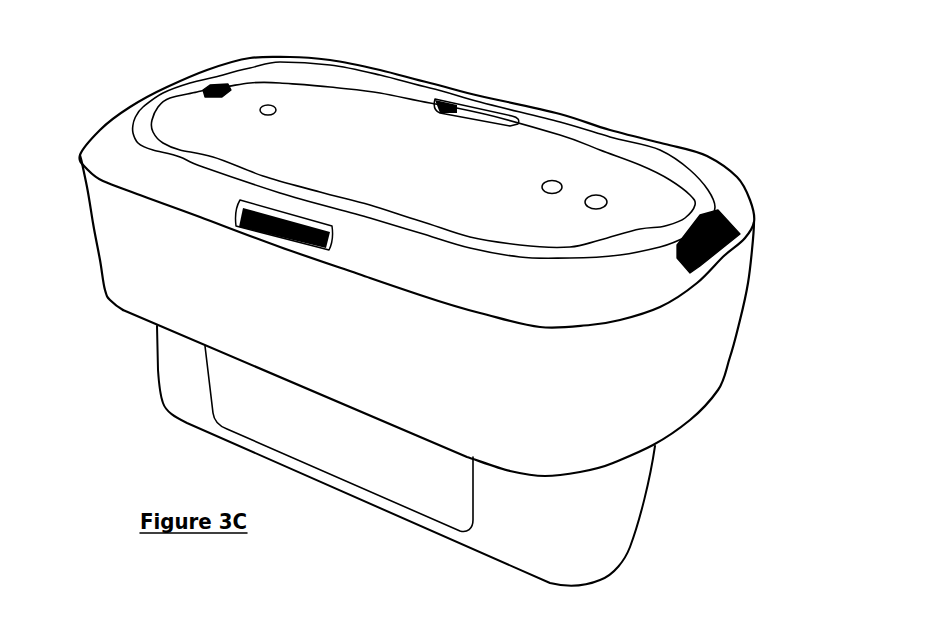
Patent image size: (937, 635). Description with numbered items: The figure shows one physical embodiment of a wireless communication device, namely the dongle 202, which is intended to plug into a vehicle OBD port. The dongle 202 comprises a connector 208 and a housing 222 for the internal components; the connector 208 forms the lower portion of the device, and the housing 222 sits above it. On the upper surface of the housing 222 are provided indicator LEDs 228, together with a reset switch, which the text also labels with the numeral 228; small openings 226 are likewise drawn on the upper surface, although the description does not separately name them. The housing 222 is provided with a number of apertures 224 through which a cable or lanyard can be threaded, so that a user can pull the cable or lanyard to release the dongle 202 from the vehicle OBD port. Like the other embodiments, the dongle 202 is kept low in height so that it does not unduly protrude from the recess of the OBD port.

The dongle 202 is at (148, 421).
The connector 208 is at (617, 528).
The housing 222 is at (700, 362).
The apertures 224 is at (483, 120).
The openings 226 is at (566, 182).
The indicator LEDs 228 is at (262, 104).